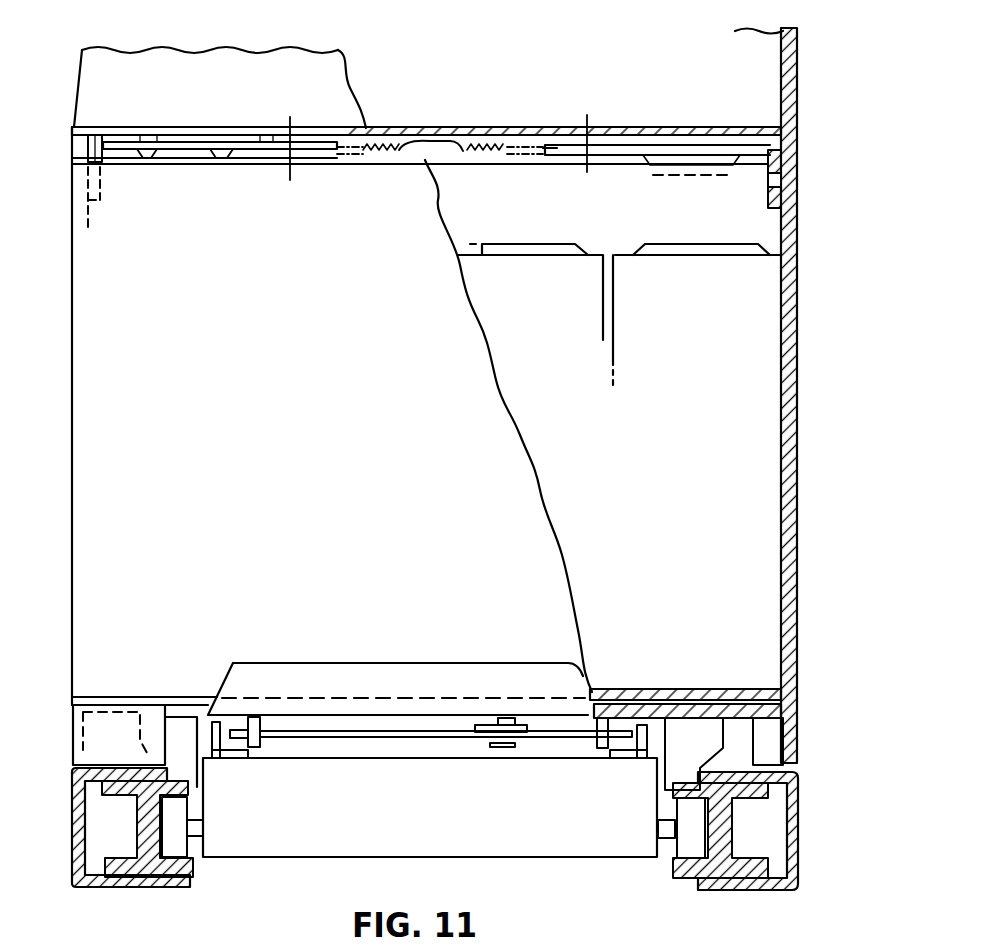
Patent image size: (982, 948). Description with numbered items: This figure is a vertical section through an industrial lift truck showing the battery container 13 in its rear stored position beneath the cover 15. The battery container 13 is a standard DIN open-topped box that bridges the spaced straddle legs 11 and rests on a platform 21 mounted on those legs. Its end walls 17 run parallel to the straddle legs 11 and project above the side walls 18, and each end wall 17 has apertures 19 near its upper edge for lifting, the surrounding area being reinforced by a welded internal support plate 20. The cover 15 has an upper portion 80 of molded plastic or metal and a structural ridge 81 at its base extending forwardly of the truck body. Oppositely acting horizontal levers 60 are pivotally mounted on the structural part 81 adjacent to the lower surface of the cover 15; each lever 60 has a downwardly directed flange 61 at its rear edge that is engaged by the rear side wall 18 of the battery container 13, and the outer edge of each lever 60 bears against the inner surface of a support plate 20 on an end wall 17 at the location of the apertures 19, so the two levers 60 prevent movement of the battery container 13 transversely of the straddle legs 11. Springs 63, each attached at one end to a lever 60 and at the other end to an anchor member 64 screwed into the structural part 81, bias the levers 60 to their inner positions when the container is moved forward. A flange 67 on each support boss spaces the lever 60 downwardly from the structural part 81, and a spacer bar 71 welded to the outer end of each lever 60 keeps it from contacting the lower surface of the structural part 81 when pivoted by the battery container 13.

The straddle legs 11 is at (121, 889).
The battery container 13 is at (101, 398).
The cover 15 is at (108, 46).
The end walls 17 is at (790, 386).
The side walls 18 is at (752, 234).
The apertures 19 is at (797, 175).
The internal support plate 20 is at (88, 148).
The platform 21 is at (786, 706).
The horizontal levers 60 is at (170, 150).
The downwardly directed flange 61 is at (213, 159).
The springs 63 is at (375, 150).
The anchor member 64 is at (457, 151).
The flange 67 is at (270, 139).
The spacer bar 71 is at (143, 136).
The upper portion 80 is at (342, 103).
The structural ridge 81 is at (438, 128).